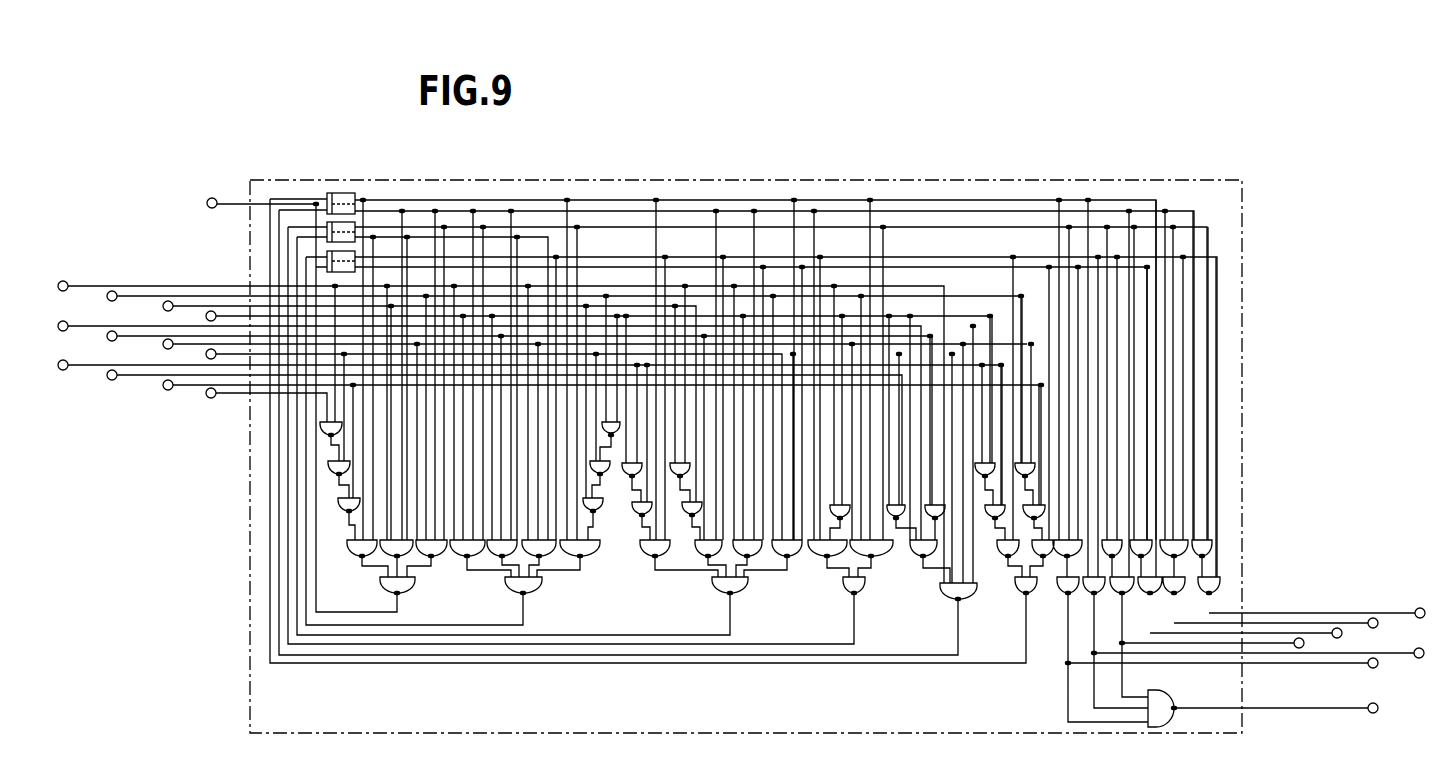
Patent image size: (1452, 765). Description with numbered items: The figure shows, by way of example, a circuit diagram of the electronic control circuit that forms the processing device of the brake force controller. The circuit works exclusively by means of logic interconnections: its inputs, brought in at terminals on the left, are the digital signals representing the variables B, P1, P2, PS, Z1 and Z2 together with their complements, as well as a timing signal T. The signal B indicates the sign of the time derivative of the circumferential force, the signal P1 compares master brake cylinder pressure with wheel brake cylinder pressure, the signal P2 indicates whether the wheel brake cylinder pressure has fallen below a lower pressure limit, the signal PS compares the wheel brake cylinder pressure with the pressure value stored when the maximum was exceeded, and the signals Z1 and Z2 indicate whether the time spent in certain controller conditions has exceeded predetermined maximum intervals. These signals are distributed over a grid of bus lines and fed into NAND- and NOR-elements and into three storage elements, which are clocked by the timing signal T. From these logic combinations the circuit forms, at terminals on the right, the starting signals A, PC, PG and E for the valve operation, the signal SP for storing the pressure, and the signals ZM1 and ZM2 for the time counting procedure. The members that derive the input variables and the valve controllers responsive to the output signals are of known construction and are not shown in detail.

The timing signal T is at (210, 201).
The circumferential force direction signal B is at (62, 281).
The pressure comparison signal P1 is at (170, 270).
The lower pressure limit signal P2 is at (66, 304).
The first time interval signal Z1 is at (163, 343).
The second time interval signal Z2 is at (64, 370).
The stored pressure comparison signal PS is at (162, 390).
The first time counting starting signal ZM1 is at (1372, 616).
The second time counting starting signal ZM2 is at (1412, 611).
The pressure storing signal SP is at (1261, 641).
The valve operation starting signal PG is at (1302, 651).
The valve operation starting signal E is at (1371, 668).
The valve operation starting signal PC is at (1416, 658).
The valve operation starting signal A is at (1372, 713).